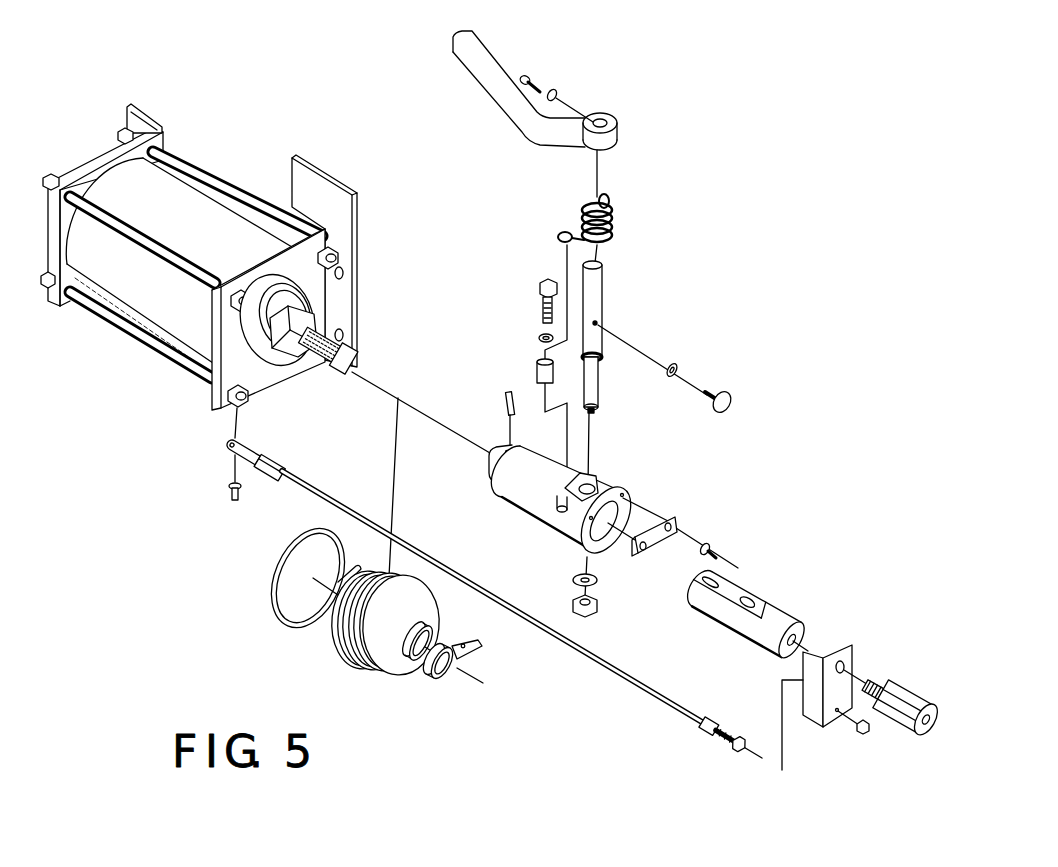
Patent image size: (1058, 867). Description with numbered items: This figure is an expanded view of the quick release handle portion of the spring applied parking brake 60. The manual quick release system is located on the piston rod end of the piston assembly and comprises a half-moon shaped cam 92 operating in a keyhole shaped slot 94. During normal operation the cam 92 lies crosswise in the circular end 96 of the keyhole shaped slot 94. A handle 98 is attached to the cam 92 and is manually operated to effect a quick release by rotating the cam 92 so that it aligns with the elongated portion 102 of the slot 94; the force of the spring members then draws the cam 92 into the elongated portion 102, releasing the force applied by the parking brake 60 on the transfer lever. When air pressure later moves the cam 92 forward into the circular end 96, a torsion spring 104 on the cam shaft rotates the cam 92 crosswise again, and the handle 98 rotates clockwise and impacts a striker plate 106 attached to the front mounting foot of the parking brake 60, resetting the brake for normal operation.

The parking brake 60 is at (205, 140).
The striker plate 106 is at (327, 170).
The handle 98 is at (478, 52).
The torsion spring 104 is at (613, 219).
The half-moon shaped cam 92 is at (589, 381).
The keyhole shaped slot 94 is at (742, 563).
The circular end 96 is at (758, 594).
The elongated portion 102 is at (708, 604).